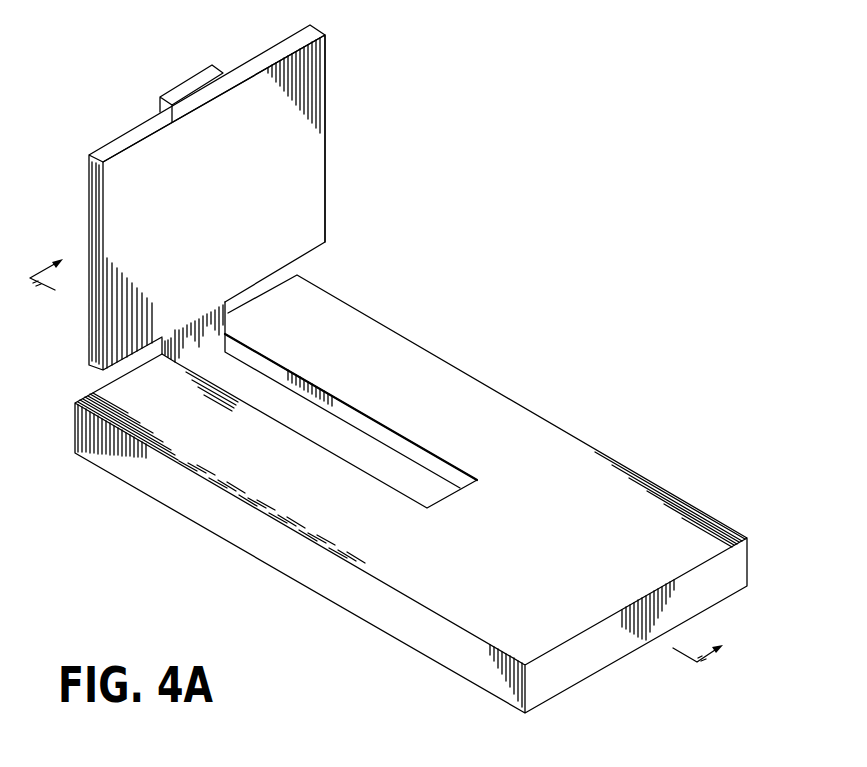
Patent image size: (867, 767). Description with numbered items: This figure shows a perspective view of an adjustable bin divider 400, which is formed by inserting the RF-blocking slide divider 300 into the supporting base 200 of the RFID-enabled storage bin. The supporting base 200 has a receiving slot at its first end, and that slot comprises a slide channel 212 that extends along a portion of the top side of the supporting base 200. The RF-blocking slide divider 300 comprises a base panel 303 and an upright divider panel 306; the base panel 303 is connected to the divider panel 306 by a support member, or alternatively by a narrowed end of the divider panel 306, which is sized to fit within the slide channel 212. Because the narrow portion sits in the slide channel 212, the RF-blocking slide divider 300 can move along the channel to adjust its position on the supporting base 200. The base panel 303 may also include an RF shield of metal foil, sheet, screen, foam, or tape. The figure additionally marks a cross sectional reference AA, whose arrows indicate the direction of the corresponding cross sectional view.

The supporting base 200 is at (572, 443).
The slide channel 212 is at (414, 444).
The RF-blocking slide divider 300 is at (346, 69).
The base panel 303 is at (355, 430).
The divider panel 306 is at (325, 185).
The adjustable bin divider 400 is at (541, 158).